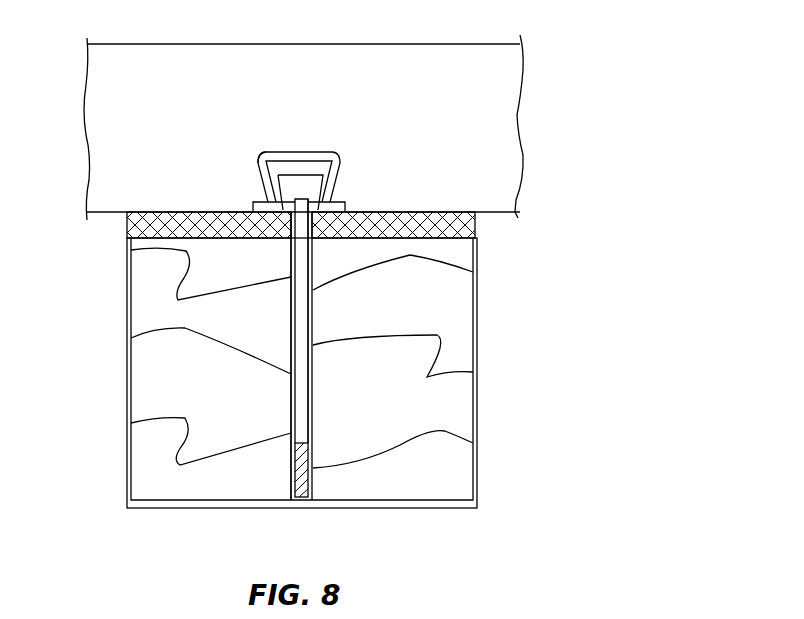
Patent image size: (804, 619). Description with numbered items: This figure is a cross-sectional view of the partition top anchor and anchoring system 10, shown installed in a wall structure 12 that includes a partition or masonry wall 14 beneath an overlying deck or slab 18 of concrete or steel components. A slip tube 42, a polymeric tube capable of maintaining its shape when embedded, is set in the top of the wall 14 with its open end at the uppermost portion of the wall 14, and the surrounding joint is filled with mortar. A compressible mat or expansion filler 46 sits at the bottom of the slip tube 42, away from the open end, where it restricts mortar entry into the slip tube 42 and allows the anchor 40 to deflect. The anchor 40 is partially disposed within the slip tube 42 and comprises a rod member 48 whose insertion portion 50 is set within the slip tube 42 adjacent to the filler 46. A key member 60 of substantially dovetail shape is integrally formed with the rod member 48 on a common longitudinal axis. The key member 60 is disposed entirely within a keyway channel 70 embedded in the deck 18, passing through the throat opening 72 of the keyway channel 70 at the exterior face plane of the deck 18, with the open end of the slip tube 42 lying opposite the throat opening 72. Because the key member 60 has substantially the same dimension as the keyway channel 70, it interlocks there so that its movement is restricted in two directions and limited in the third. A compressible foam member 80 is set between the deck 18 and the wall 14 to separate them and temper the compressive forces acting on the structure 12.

The partition top anchor and anchoring system 10 is at (579, 49).
The wall structure 12 is at (140, 249).
The partition or masonry wall 14 is at (146, 367).
The overlying deck or slab 18 is at (394, 53).
The anchor 40 is at (302, 314).
The slip tube 42 is at (292, 302).
The compressible mat or expansion filler 46 is at (308, 480).
The rod member 48 is at (300, 388).
The insertion portion 50 is at (302, 414).
The key member 60 is at (316, 191).
The keyway channel 70 is at (300, 157).
The throat opening 72 is at (264, 165).
The compressible foam member 80 is at (477, 227).